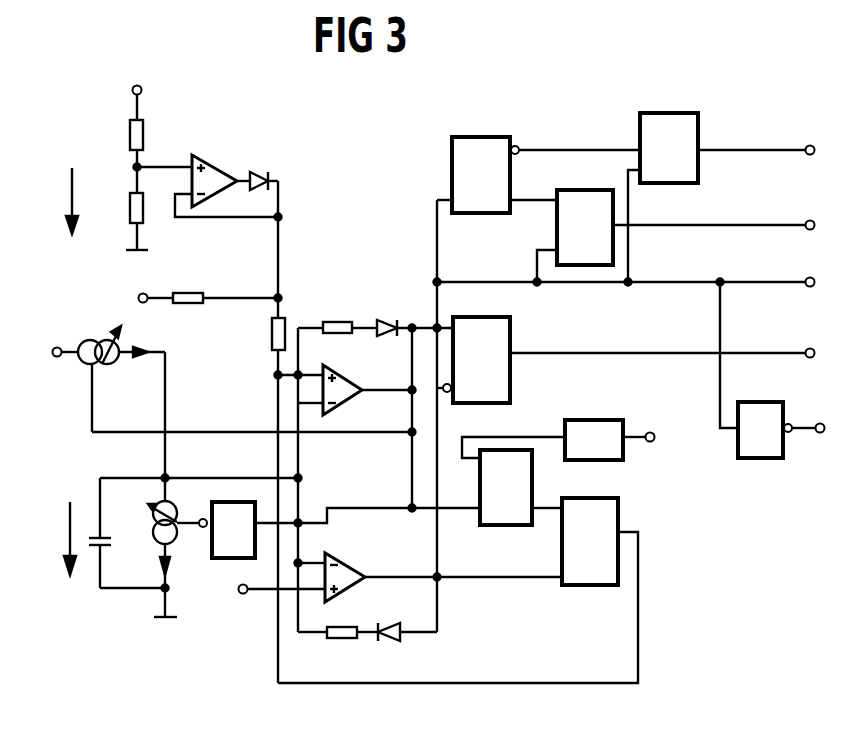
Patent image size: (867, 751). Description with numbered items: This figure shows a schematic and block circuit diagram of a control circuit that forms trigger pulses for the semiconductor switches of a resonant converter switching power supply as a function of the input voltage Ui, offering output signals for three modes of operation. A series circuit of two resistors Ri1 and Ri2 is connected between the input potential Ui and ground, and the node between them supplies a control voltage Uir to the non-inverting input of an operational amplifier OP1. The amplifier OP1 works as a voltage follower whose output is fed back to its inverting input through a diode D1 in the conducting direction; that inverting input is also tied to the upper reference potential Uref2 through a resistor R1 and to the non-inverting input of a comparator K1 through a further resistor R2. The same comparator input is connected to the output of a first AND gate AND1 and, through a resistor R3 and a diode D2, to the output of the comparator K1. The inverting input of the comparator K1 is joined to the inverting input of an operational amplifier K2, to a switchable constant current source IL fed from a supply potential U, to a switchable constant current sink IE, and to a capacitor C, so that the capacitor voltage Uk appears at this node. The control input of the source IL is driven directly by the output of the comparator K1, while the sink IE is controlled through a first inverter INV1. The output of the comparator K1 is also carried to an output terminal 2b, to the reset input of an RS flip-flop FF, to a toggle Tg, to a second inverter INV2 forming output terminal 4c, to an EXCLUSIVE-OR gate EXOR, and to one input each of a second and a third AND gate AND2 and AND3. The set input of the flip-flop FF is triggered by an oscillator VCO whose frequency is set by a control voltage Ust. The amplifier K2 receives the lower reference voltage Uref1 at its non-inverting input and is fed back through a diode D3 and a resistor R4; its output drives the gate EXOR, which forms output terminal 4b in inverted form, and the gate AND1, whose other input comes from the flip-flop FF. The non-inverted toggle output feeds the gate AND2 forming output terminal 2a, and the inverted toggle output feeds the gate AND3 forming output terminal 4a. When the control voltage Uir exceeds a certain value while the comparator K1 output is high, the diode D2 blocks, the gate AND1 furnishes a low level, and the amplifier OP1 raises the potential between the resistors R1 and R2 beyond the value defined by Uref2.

The input voltage Ui is at (125, 92).
The resistor Ri1 is at (119, 154).
The resistor Ri2 is at (121, 220).
The control voltage Uir is at (60, 201).
The operational amplifier OP1 is at (209, 173).
The diode D1 is at (271, 410).
The resistor R1 is at (227, 279).
The upper reference potential Uref2 is at (125, 295).
The resistor R2 is at (283, 348).
The resistor R3 is at (337, 457).
The diode D2 is at (415, 308).
The comparator K1 is at (254, 420).
The EXCLUSIVE-OR gate EXOR is at (472, 456).
The toggle Tg is at (538, 186).
The third AND gate AND3 is at (662, 180).
The second AND gate AND2 is at (574, 219).
The output terminal 4a is at (759, 129).
The output terminal 2a is at (717, 205).
The output terminal 2b is at (629, 262).
The output terminal 4b is at (666, 333).
The second inverter circuit INV2 is at (756, 370).
The output terminal 4c is at (810, 411).
The oscillator VCO is at (542, 419).
The control voltage Ust is at (657, 438).
The RS flip-flop FF is at (430, 506).
The first AND gate AND1 is at (458, 572).
The operational amplifier K2 is at (429, 564).
The lower reference voltage Uref1 is at (263, 609).
The resistor R4 is at (338, 653).
The diode D3 is at (407, 654).
The supply potential U is at (58, 353).
The current source IL is at (121, 413).
The capacitor C is at (194, 532).
The capacitor voltage Uk is at (59, 538).
The current sink IE is at (160, 557).
The first inverter circuit INV1 is at (220, 502).